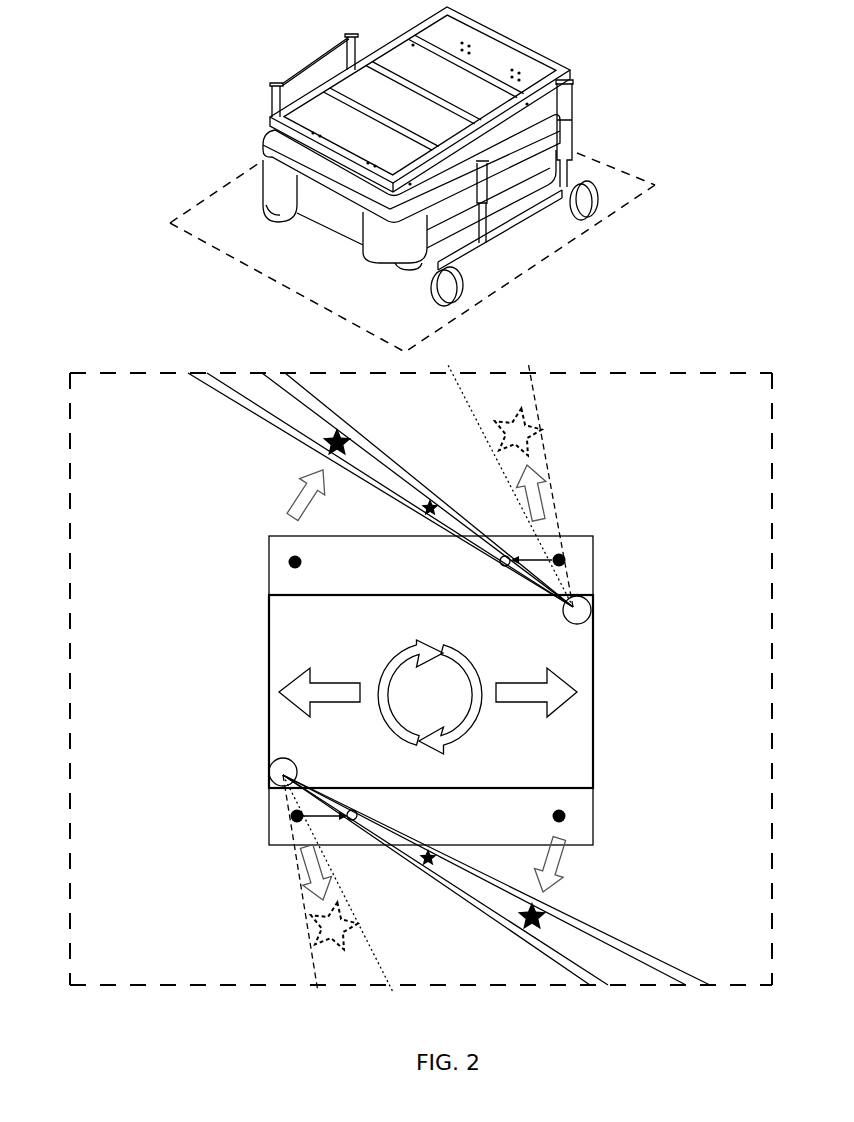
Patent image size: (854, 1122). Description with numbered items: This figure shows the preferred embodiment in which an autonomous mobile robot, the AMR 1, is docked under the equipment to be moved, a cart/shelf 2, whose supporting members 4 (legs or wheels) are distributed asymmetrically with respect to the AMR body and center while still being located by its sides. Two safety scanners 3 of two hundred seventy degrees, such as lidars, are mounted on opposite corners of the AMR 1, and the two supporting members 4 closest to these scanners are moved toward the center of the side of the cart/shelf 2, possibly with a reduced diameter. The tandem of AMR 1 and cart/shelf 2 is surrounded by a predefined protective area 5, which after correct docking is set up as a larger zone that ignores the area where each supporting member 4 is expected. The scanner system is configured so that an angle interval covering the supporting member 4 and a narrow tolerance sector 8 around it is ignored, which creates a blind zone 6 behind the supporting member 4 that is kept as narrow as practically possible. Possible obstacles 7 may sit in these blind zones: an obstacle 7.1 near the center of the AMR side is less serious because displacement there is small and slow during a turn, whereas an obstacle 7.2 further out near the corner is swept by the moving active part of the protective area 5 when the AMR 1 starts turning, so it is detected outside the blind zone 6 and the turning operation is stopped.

The autonomous mobile robot (AMR) 1 is at (575, 712).
The cart/shelf 2 is at (269, 576).
The safety scanner 3 is at (590, 608).
The supporting member 4 is at (566, 560).
The protective area 5 is at (140, 373).
The blind zone 6 is at (262, 388).
The obstacle 7 is at (537, 430).
The obstacle near the center of the AMR 7.1 is at (435, 500).
The obstacle further from the center of the AMR 7.2 is at (349, 442).
The tolerance sector 8 is at (290, 428).